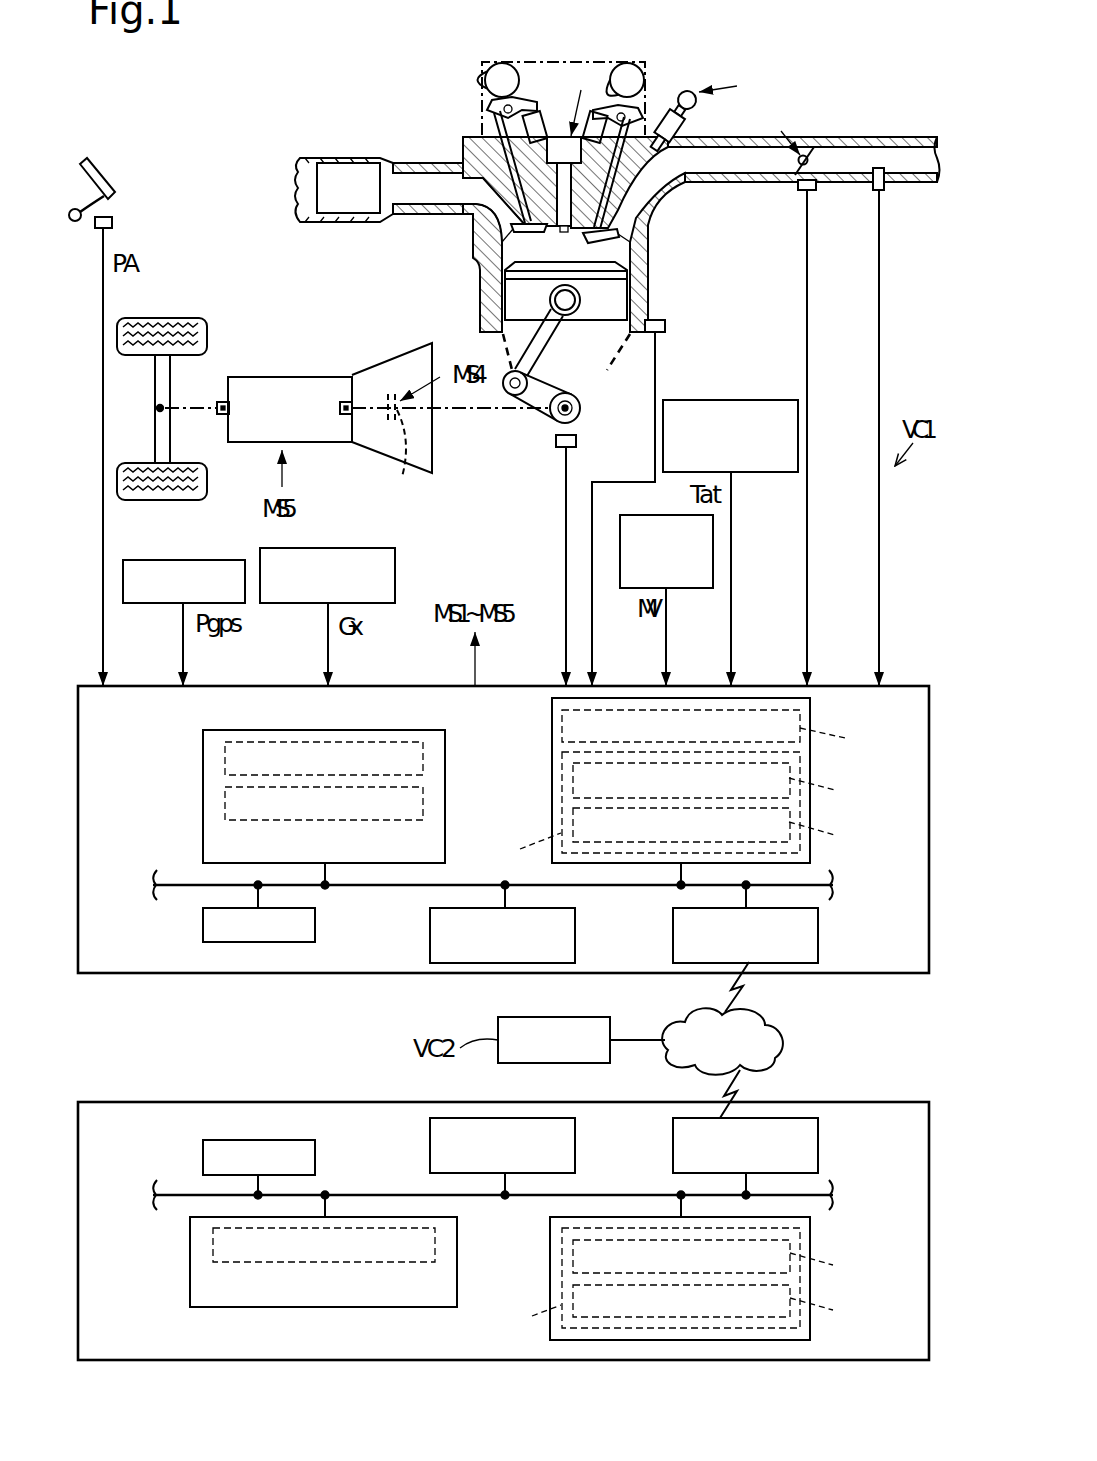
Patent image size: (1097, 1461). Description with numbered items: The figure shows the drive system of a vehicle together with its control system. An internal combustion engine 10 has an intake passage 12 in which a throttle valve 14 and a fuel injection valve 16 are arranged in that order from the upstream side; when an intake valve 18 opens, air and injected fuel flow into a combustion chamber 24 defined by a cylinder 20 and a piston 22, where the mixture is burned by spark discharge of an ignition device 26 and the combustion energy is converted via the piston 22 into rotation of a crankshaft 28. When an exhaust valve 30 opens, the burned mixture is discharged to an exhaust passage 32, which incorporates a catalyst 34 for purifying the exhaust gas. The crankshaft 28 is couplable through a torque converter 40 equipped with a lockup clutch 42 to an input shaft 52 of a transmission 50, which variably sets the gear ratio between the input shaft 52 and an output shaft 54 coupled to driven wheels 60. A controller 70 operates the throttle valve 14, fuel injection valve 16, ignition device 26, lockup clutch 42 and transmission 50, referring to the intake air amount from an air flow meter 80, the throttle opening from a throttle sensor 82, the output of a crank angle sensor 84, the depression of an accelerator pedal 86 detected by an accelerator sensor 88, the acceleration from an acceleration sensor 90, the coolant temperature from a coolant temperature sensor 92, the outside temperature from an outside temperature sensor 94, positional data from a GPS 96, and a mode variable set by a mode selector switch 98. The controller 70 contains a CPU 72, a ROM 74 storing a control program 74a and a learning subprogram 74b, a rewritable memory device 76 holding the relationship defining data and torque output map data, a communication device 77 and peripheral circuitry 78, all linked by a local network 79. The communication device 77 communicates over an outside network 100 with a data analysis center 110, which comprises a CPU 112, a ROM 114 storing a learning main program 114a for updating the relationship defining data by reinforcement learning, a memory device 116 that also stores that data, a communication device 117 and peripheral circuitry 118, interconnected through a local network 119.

The internal combustion engine 10 is at (707, 52).
The intake passage 12 is at (935, 170).
The throttle valve 14 is at (810, 162).
The fuel injection valve 16 is at (690, 140).
The intake valve 18 is at (647, 228).
The cylinder 20 is at (632, 262).
The piston 22 is at (614, 302).
The combustion chamber 24 is at (510, 249).
The ignition device 26 is at (555, 137).
The crankshaft 28 is at (565, 397).
The exhaust valve 30 is at (513, 197).
The exhaust passage 32 is at (428, 178).
The catalyst 34 is at (345, 173).
The torque converter 40 is at (381, 368).
The lockup clutch 42 is at (403, 450).
The transmission 50 is at (277, 375).
The input shaft 52 is at (342, 406).
The output shaft 54 is at (220, 402).
The driven wheels 60 is at (183, 318).
The controller 70 is at (912, 686).
The CPU 72 is at (315, 928).
The ROM 74 is at (360, 789).
The control program 74a is at (424, 757).
The learning subprogram 74b is at (424, 802).
The memory device 76 is at (812, 705).
The communication device 77 is at (818, 935).
The peripheral circuitry 78 is at (575, 935).
The local network 79 is at (817, 866).
The air flow meter 80 is at (886, 182).
The throttle sensor 82 is at (817, 188).
The crank angle sensor 84 is at (578, 440).
The accelerator pedal 86 is at (82, 157).
The accelerator sensor 88 is at (113, 222).
The acceleration sensor 90 is at (328, 548).
The coolant temperature sensor 92 is at (663, 336).
The outside temperature sensor 94 is at (747, 398).
The GPS 96 is at (185, 560).
The mode selector switch 98 is at (683, 588).
The network 100 is at (785, 1042).
The data analysis center 110 is at (896, 1102).
The CPU 112 is at (315, 1153).
The ROM 114 is at (365, 1256).
The learning main program 114a is at (436, 1245).
The memory device 116 is at (812, 1222).
The communication device 117 is at (818, 1142).
The peripheral circuitry 118 is at (575, 1142).
The local network 119 is at (827, 1188).